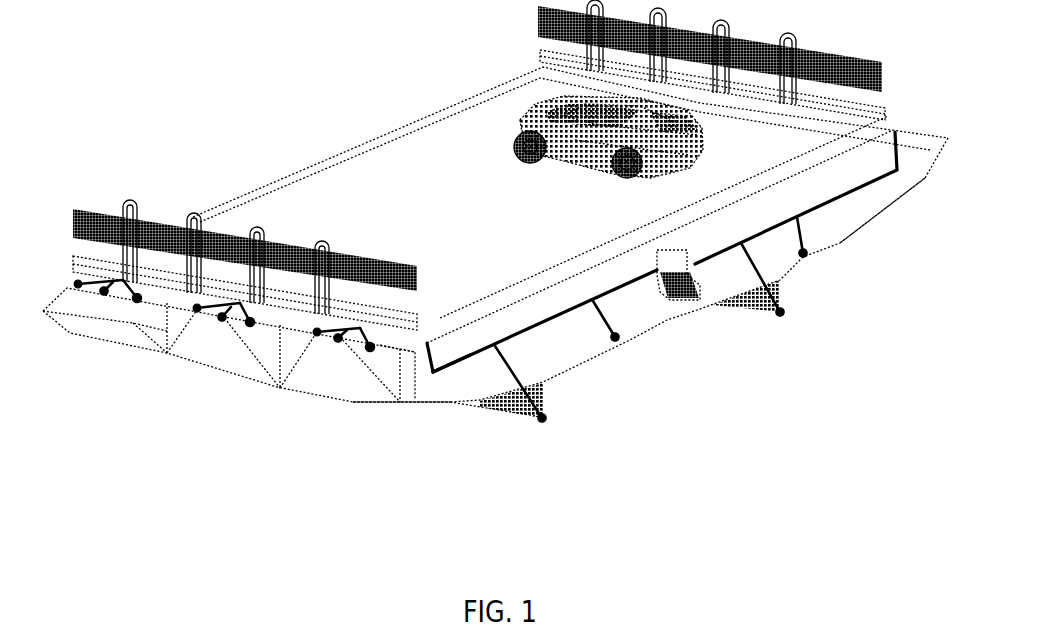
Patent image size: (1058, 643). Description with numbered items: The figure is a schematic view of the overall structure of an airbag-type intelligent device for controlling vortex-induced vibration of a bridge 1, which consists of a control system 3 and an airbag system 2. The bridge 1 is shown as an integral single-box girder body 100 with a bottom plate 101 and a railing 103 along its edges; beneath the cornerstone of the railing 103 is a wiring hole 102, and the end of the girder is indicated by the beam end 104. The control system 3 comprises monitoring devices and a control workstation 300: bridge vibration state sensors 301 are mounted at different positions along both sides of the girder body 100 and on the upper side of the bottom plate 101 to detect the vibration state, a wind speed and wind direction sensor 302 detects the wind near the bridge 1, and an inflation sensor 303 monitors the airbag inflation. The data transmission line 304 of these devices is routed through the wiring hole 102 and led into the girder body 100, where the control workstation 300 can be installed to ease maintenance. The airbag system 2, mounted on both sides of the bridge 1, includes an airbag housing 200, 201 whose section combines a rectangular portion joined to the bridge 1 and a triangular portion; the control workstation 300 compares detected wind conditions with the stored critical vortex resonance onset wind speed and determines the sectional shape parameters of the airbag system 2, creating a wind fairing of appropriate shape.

The bridge 1 is at (425, 157).
The airbag system 2 is at (928, 147).
The control system 3 is at (718, 282).
The girder body 100 is at (872, 190).
The bottom plate 101 is at (843, 242).
The wiring hole 102 is at (800, 177).
The railing 103 is at (340, 258).
The beam end 104 is at (442, 317).
The airbag housing 200 is at (385, 388).
The airbag housing 201 is at (393, 357).
The control workstation 300 is at (687, 307).
The bridge vibration state sensor 301 is at (803, 253).
The wind speed and wind direction sensor 302 is at (337, 333).
The inflation sensor 303 is at (367, 350).
The data transmission line 304 is at (448, 372).